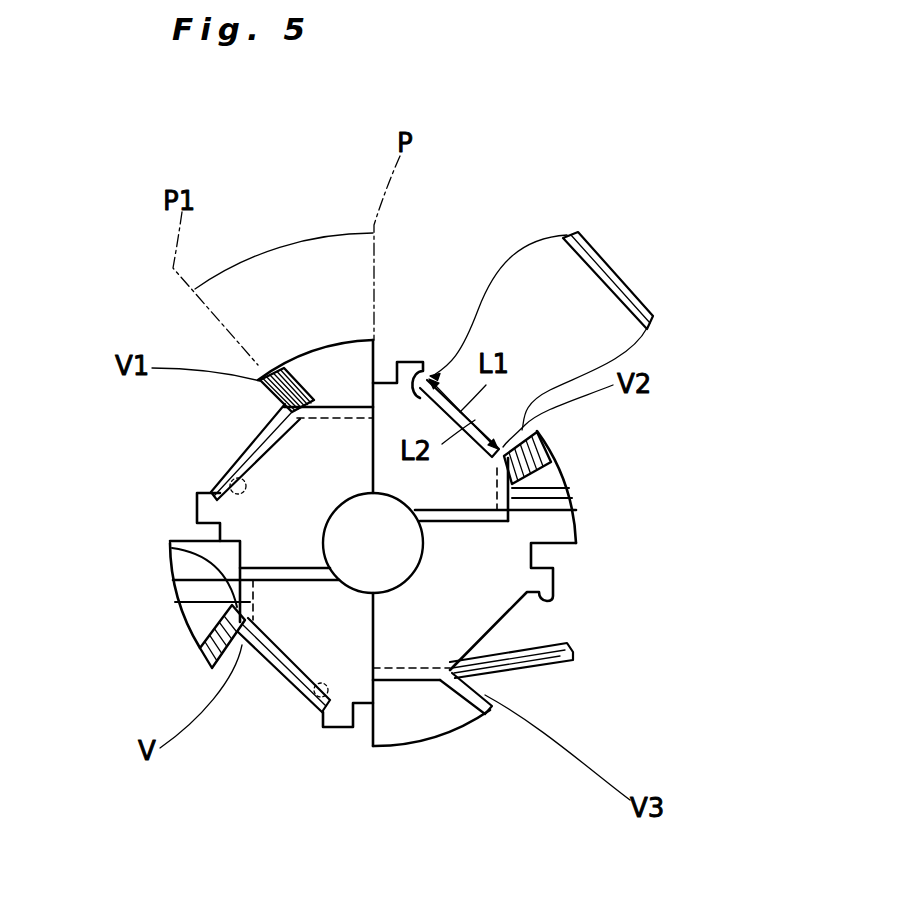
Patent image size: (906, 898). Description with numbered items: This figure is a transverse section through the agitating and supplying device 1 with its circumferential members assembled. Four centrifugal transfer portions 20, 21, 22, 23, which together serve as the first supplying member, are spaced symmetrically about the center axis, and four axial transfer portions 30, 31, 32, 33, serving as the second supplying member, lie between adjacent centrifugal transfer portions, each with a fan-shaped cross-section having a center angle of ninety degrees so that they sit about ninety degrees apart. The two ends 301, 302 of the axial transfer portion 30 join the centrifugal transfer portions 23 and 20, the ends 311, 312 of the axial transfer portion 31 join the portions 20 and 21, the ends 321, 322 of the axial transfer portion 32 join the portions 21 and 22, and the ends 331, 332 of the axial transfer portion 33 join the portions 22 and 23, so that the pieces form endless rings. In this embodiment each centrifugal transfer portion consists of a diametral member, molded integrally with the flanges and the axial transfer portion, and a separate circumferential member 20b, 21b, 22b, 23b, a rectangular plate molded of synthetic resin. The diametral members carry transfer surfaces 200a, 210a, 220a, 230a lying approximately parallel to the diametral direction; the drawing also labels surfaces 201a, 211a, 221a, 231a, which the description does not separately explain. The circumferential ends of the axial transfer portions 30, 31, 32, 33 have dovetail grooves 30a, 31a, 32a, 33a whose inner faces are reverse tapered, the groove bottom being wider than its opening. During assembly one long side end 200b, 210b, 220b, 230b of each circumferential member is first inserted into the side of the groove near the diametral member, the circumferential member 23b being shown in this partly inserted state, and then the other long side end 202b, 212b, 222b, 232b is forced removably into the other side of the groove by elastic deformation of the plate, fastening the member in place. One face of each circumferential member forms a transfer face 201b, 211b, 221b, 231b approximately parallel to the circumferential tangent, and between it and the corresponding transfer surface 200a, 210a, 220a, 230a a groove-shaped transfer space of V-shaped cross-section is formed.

The agitating and supplying device 1 is at (660, 535).
The centrifugal transfer portion 20 is at (189, 653).
The transfer surface 200a is at (240, 635).
The one long side end 200b is at (250, 626).
The first lever engaging surface 201a is at (237, 622).
The transfer face 201b is at (305, 690).
The other long side end 202b is at (326, 715).
The circumferential member 20b is at (277, 657).
The centrifugal transfer portion 21 is at (275, 352).
The transfer surface 210a is at (260, 380).
The one long side end 210b is at (296, 414).
The second lever engaging surface 211a is at (292, 376).
The transfer face 211b is at (248, 467).
The other long side end 212b is at (223, 498).
The circumferential member 21b is at (282, 406).
The centrifugal transfer portion 22 is at (573, 450).
The transfer surface 220a is at (538, 430).
The one long side end 220b is at (647, 329).
The third lever engaging surface 221a is at (518, 462).
The transfer face 221b is at (596, 250).
The other long side end 222b is at (566, 236).
The circumferential member 22b is at (625, 287).
The centrifugal transfer portion 23 is at (484, 731).
The transfer surface 230a is at (493, 705).
The one long side end 230b is at (497, 678).
The fourth lever engaging surface 231a is at (449, 668).
The transfer face 231b is at (500, 672).
The other long side end 232b is at (573, 655).
The circumferential member 23b is at (510, 666).
The axial transfer portion 30 is at (343, 668).
The dovetail groove 30a is at (316, 706).
The end 301 is at (442, 735).
The end 302 is at (250, 608).
The axial transfer portion 31 is at (195, 525).
The dovetail groove 31a is at (215, 484).
The end 311 is at (256, 541).
The end 312 is at (307, 418).
The axial transfer portion 32 is at (392, 420).
The dovetail groove 32a is at (413, 373).
The end 321 is at (312, 405).
The end 322 is at (500, 473).
The axial transfer portion 33 is at (488, 553).
The dovetail groove 33a is at (510, 618).
The end 331 is at (566, 494).
The end 332 is at (436, 680).